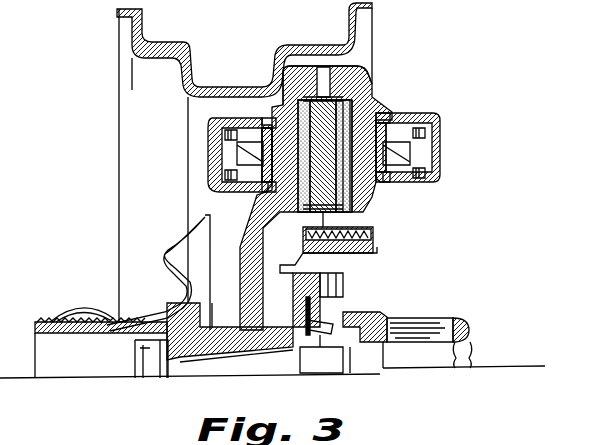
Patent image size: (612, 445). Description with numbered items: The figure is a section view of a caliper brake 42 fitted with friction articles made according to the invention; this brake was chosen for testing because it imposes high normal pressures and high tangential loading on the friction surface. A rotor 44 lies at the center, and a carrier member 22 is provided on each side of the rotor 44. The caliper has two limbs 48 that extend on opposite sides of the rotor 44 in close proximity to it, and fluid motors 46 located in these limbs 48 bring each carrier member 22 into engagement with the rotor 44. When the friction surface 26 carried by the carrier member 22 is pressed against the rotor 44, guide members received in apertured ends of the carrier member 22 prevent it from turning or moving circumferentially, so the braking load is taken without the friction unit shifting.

The caliper brake 42 is at (375, 74).
The rotor 44 is at (373, 214).
The fluid motors 46 is at (435, 122).
The limbs 48 is at (366, 96).
The carrier member 22 is at (405, 163).
The friction surface 26 is at (385, 182).